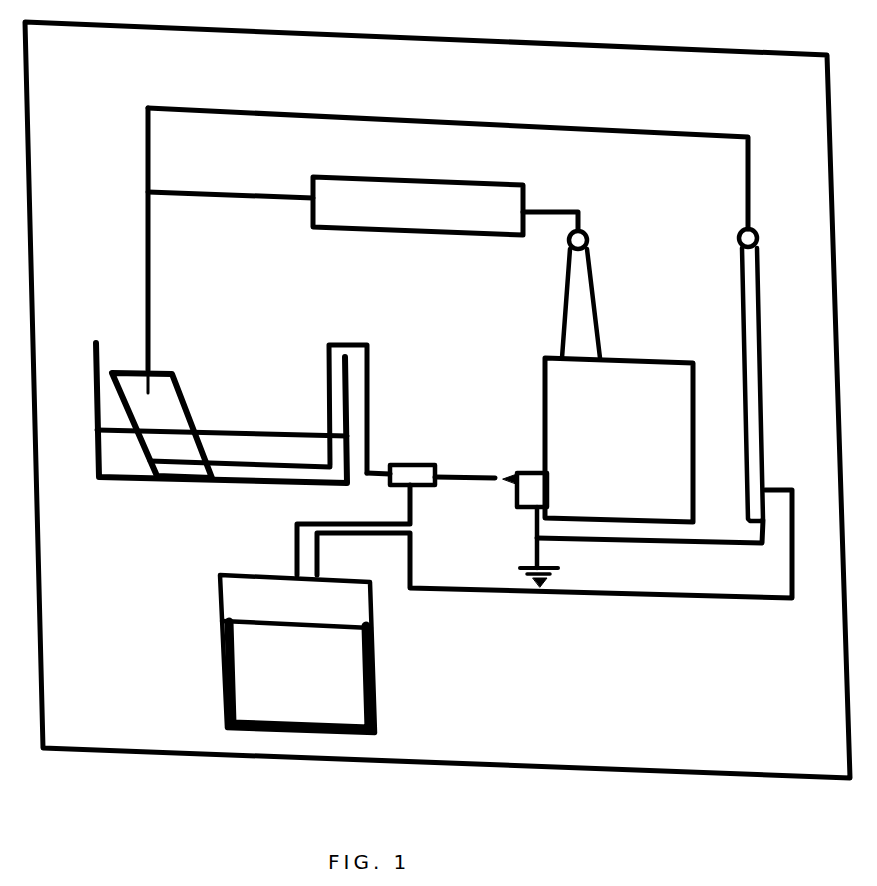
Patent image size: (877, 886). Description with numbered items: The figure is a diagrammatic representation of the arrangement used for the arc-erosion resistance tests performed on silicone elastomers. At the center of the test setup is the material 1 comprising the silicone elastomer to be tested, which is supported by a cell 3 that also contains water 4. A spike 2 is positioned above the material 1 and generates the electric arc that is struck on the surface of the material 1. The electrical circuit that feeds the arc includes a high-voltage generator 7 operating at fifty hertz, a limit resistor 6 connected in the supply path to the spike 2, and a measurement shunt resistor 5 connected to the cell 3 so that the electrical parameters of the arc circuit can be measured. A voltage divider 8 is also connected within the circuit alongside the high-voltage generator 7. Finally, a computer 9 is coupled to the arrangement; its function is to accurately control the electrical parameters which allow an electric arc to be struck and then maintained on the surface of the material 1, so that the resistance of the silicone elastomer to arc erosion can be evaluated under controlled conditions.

The material comprising the silicone elastomer to be tested 1 is at (137, 393).
The spike 2 is at (194, 250).
The cell 3 is at (119, 479).
The water 4 is at (258, 453).
The measurement shunt resistor 5 is at (408, 477).
The limit resistor 6 is at (388, 210).
The high-voltage generator 7 is at (623, 425).
The voltage divider 8 is at (757, 412).
The computer 9 is at (315, 683).